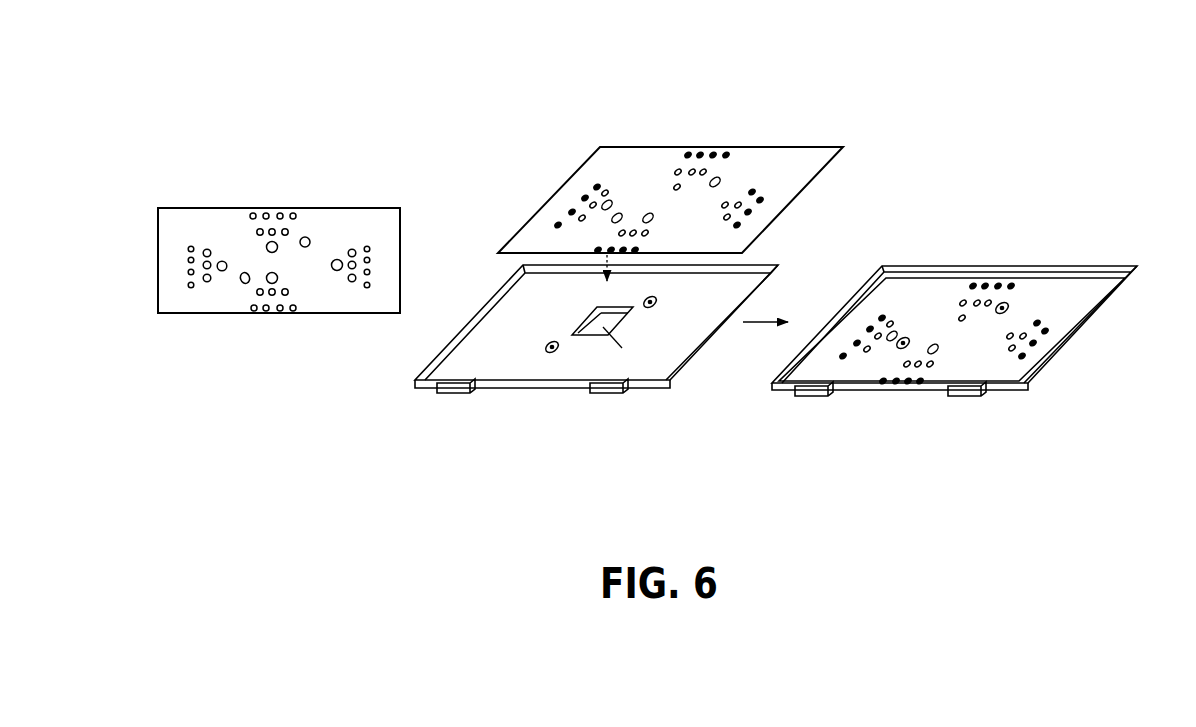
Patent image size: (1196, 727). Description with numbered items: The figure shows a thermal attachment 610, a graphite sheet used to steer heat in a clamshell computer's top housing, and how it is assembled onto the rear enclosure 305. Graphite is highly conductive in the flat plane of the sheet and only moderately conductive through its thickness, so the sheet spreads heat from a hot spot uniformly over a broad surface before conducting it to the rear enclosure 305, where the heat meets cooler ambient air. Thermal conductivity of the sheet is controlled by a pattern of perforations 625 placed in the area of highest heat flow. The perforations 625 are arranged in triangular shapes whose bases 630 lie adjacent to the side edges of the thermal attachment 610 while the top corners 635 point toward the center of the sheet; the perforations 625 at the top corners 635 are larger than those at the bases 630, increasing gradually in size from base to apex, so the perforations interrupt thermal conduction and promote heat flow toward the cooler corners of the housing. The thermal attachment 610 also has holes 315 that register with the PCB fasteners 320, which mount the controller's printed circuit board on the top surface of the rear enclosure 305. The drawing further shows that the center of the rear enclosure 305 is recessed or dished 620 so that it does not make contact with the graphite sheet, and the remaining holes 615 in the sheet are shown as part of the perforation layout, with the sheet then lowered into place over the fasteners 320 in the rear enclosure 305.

The rear enclosure 305 is at (768, 266).
The holes 315 is at (305, 237).
The PCB fasteners 320 is at (543, 338).
The thermal attachment 610 is at (377, 198).
The hole 615 is at (712, 177).
The recessed or dished center 620 is at (579, 343).
The perforations 625 is at (353, 279).
The bases of the perforated triangles 630 is at (382, 258).
The top corners of the perforated triangles 635 is at (333, 252).